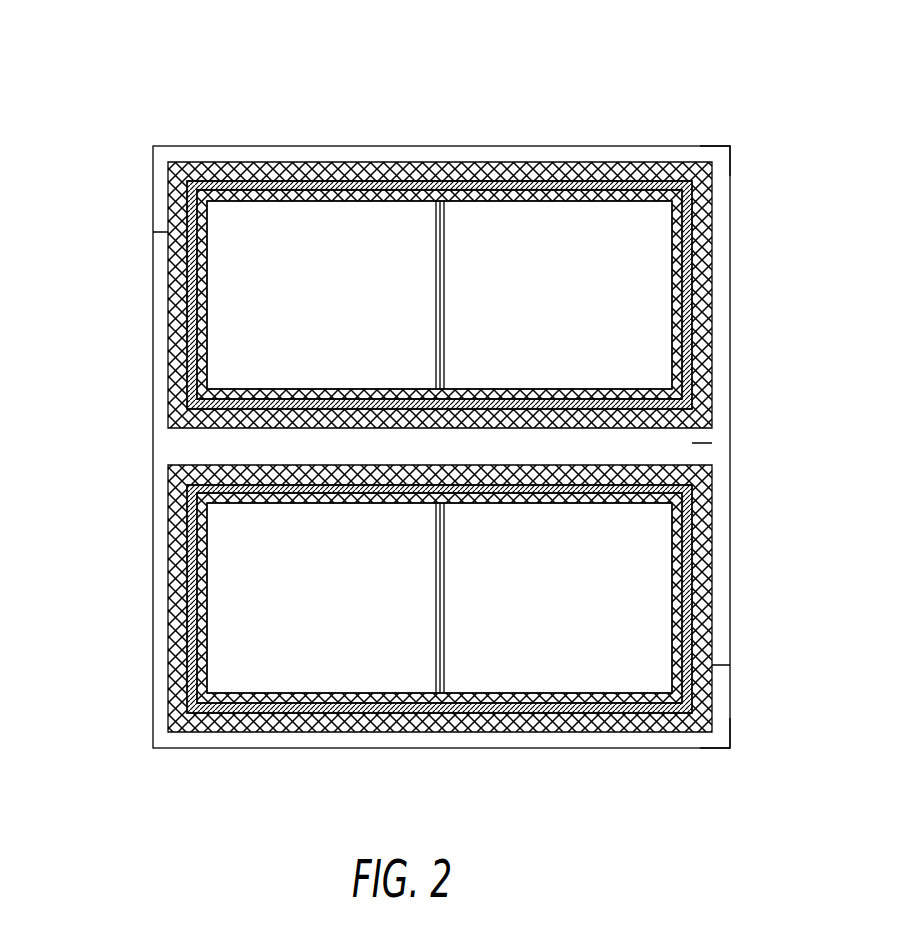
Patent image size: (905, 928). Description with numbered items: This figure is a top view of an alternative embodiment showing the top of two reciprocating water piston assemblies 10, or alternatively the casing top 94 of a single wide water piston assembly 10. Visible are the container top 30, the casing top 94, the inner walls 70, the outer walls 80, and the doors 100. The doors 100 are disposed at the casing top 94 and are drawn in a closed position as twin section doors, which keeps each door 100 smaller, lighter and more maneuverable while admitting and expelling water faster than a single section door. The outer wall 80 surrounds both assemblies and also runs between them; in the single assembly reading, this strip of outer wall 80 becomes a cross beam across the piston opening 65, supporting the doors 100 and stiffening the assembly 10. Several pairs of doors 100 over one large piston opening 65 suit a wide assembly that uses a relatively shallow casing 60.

The reciprocating water piston assembly 10 is at (421, 446).
The container top 30 is at (700, 338).
The casing 60 is at (241, 146).
The piston opening 65 is at (445, 250).
The inner wall 70 is at (701, 243).
The outer wall 80 is at (153, 232).
The casing top 94 is at (727, 140).
The door 100 is at (332, 240).